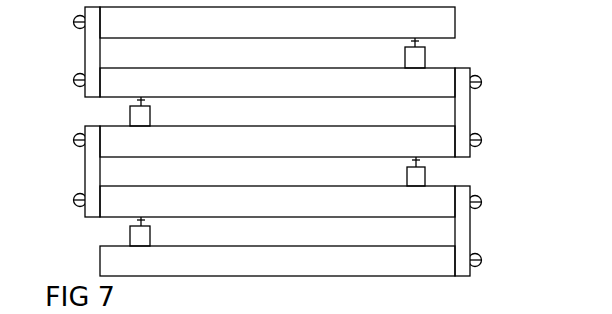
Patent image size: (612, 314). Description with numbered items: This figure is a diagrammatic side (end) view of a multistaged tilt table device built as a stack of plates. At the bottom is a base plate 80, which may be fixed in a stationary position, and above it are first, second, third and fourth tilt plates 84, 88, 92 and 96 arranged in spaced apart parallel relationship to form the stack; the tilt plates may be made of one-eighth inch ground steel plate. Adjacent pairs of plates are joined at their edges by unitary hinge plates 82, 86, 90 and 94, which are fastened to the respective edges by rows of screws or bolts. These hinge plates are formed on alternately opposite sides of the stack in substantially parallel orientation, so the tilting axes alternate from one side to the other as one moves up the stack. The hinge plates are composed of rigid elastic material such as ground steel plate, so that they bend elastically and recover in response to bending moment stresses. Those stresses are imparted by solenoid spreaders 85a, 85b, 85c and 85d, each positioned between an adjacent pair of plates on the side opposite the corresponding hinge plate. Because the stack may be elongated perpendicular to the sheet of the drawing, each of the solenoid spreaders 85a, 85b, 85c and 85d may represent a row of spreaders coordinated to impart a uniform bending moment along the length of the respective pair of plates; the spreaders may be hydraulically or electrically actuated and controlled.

The base plate 80 is at (299, 274).
The hinge plate 82 is at (470, 228).
The first tilt plate 84 is at (293, 214).
The solenoid spreader 85a is at (130, 235).
The solenoid spreader 85b is at (425, 175).
The solenoid spreader 85c is at (130, 108).
The solenoid spreader 85d is at (425, 62).
The hinge plate 86 is at (85, 167).
The second tilt plate 88 is at (294, 153).
The hinge plate 90 is at (470, 112).
The third tilt plate 92 is at (293, 95).
The hinge plate 94 is at (85, 45).
The fourth tilt plate 96 is at (288, 34).